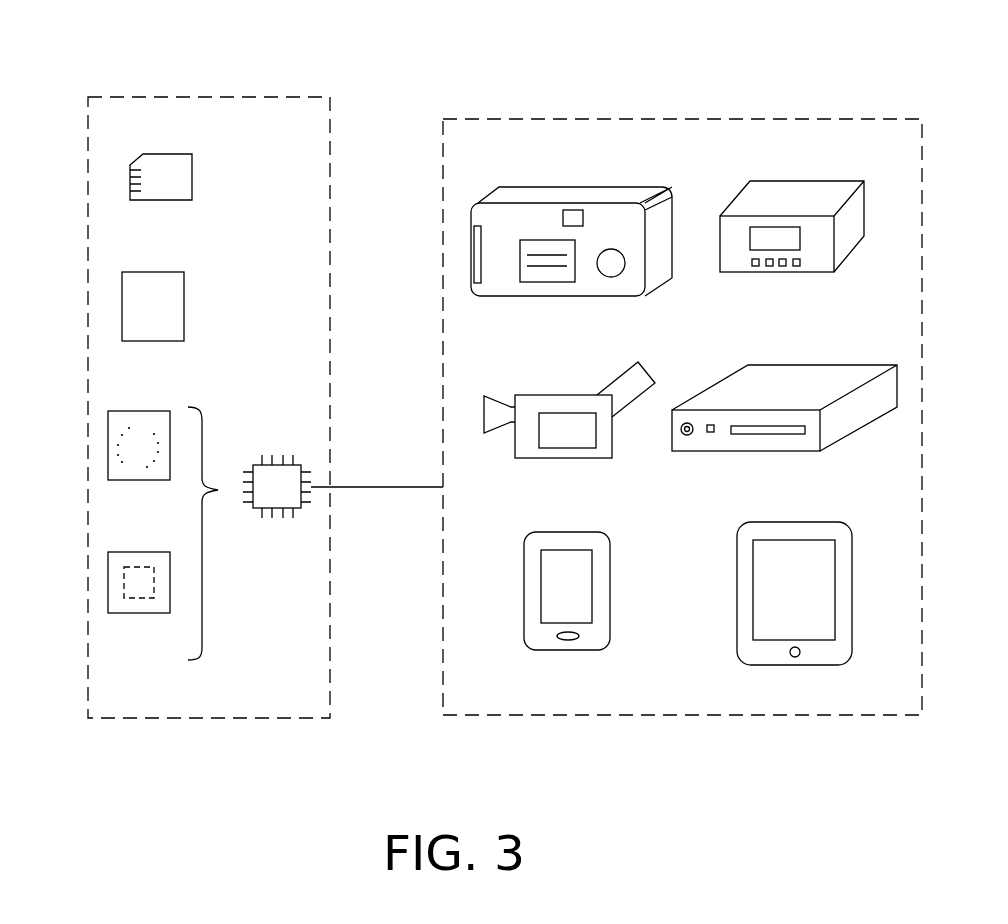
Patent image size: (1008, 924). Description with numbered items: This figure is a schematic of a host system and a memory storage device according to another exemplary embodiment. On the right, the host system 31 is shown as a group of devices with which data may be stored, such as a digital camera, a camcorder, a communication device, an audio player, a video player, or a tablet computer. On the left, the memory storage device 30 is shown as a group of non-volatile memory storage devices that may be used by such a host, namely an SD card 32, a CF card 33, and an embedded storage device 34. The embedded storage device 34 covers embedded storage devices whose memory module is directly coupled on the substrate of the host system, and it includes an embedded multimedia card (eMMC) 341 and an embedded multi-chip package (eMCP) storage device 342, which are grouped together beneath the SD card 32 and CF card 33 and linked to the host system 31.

The memory storage device 30 is at (198, 97).
The host system 31 is at (605, 118).
The SD card 32 is at (130, 182).
The CF card 33 is at (122, 308).
The embedded storage device 34 is at (282, 455).
The embedded multimedia card (eMMC) 341 is at (108, 448).
The embedded multi-chip package (eMCP) storage device 342 is at (108, 585).